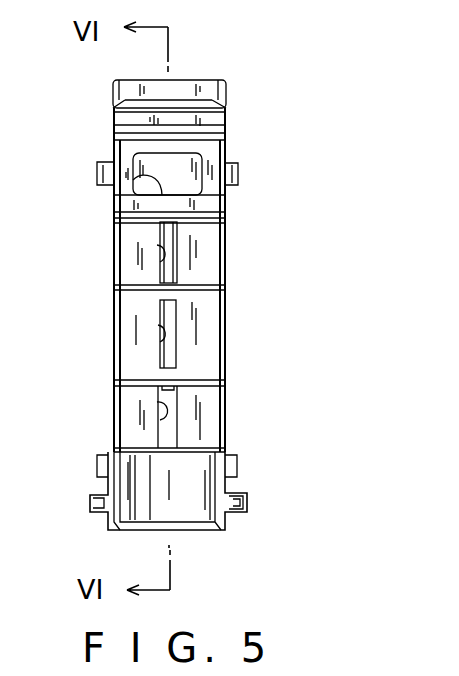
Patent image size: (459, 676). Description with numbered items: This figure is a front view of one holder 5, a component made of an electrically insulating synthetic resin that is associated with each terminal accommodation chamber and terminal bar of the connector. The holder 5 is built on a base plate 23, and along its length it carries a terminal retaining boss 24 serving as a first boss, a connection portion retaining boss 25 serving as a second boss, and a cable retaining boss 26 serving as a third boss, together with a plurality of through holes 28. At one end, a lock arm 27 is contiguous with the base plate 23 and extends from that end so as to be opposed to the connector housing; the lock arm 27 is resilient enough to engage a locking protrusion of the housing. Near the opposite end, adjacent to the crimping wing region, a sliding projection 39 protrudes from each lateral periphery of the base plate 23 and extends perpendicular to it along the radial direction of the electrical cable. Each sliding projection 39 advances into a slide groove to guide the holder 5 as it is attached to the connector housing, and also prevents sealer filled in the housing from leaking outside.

The holder 5 is at (236, 238).
The base plate 23 is at (198, 257).
The terminal retaining boss 24 is at (210, 157).
The connection portion retaining boss 25 is at (178, 316).
The cable retaining boss 26 is at (187, 490).
The lock arm 27 is at (188, 82).
The through holes 28 is at (157, 245).
The sliding projection 39 is at (88, 505).